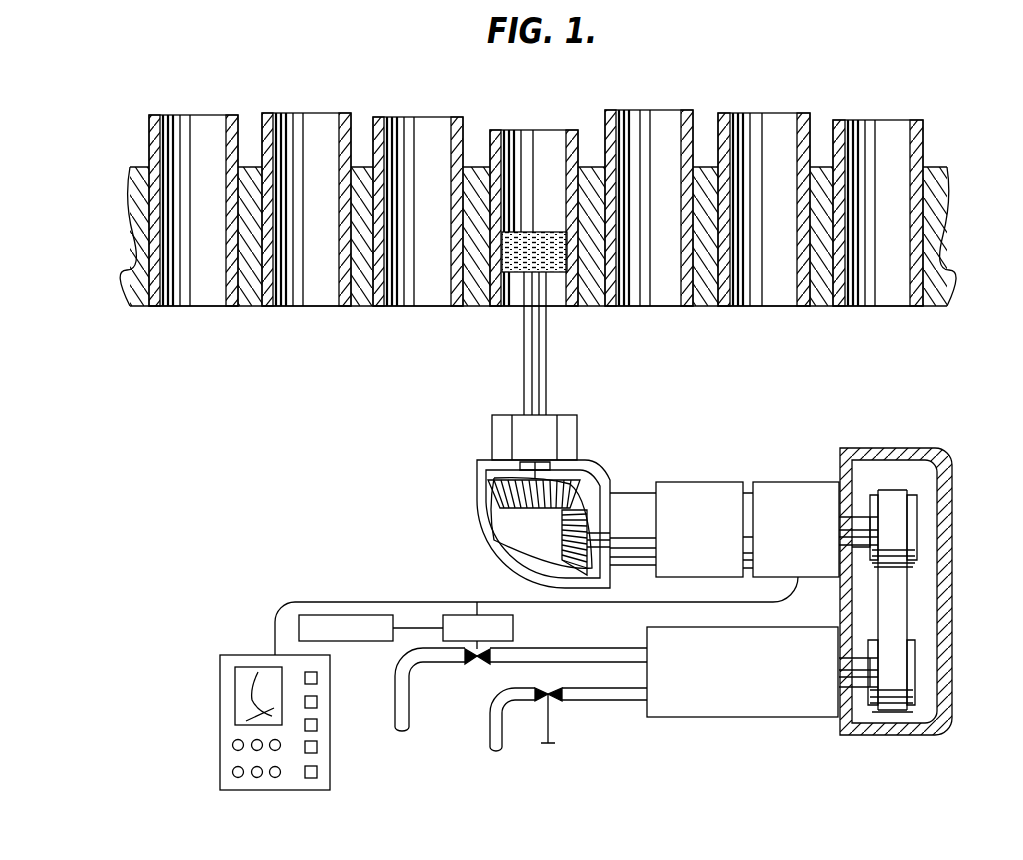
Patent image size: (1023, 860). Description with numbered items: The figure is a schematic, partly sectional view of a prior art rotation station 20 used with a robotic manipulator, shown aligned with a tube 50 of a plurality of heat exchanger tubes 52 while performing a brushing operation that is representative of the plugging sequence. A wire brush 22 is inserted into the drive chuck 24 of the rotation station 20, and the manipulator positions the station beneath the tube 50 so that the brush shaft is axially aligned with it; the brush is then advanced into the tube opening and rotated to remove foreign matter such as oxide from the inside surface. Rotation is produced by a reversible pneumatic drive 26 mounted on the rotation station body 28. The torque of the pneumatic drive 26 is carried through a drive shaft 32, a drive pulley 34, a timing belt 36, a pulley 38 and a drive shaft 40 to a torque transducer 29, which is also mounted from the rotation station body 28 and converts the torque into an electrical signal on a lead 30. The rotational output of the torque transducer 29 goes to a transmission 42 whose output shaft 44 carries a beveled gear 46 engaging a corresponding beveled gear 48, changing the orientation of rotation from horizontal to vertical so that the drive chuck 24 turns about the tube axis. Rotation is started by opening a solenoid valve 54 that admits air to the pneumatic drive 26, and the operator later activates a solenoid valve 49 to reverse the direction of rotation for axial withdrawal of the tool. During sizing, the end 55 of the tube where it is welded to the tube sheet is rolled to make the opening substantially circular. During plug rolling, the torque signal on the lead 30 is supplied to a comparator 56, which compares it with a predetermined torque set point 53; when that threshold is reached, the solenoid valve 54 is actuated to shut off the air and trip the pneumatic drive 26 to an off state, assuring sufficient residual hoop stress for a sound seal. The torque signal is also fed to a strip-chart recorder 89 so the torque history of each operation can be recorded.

The rotation station 20 is at (926, 592).
The wire brush 22 is at (522, 308).
The drive chuck 24 is at (578, 434).
The reversible pneumatic drive 26 is at (814, 719).
The rotation station body 28 is at (928, 452).
The torque transducer 29 is at (797, 482).
The lead 30 is at (368, 602).
The drive shaft 32 is at (862, 690).
The drive pulley 34 is at (915, 668).
The timing belt 36 is at (908, 594).
The pulley 38 is at (925, 510).
The drive shaft 40 is at (860, 516).
The transmission 42 is at (699, 482).
The output shaft 44 is at (625, 505).
The beveled gear 46 is at (576, 537).
The beveled gear 48 is at (489, 500).
The solenoid valve 49 is at (553, 700).
The tube 50 is at (581, 128).
The heat exchanger tubes 52 is at (356, 118).
The set point 53 is at (345, 642).
The solenoid valve 54 is at (477, 664).
The end 55 is at (378, 306).
The comparator 56 is at (513, 623).
The strip-chart recorder 89 is at (250, 655).